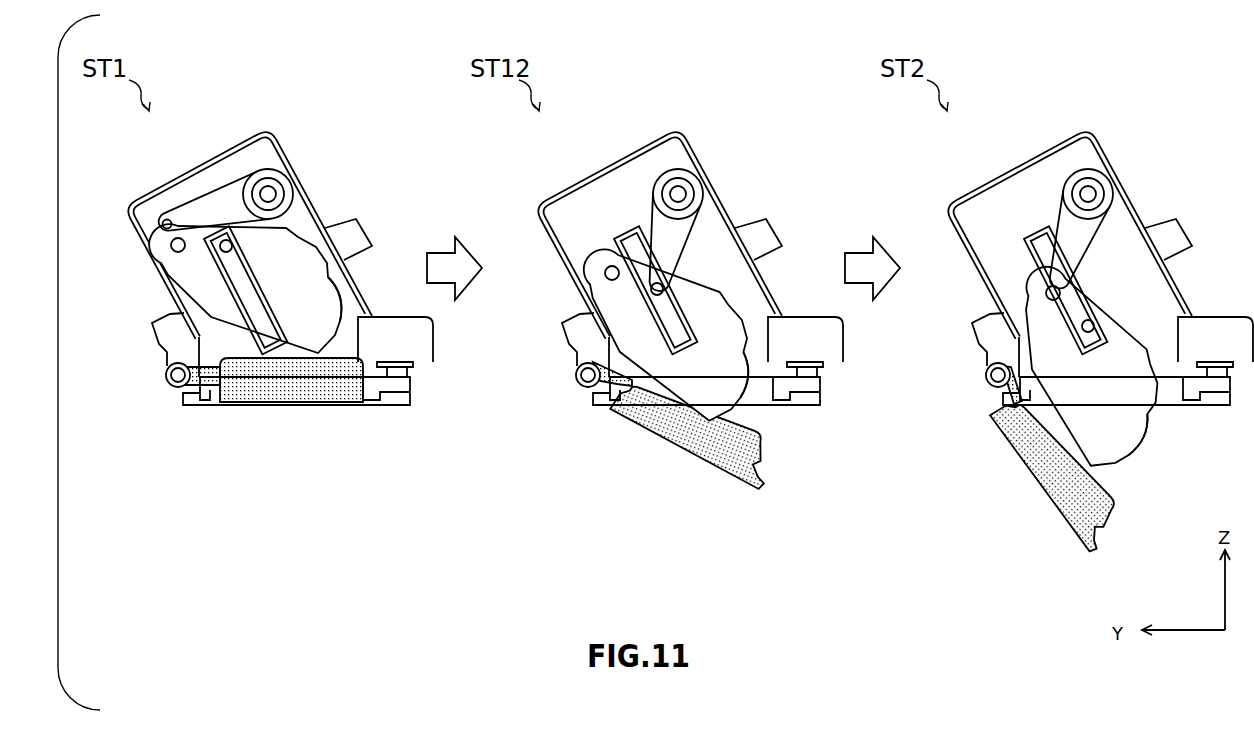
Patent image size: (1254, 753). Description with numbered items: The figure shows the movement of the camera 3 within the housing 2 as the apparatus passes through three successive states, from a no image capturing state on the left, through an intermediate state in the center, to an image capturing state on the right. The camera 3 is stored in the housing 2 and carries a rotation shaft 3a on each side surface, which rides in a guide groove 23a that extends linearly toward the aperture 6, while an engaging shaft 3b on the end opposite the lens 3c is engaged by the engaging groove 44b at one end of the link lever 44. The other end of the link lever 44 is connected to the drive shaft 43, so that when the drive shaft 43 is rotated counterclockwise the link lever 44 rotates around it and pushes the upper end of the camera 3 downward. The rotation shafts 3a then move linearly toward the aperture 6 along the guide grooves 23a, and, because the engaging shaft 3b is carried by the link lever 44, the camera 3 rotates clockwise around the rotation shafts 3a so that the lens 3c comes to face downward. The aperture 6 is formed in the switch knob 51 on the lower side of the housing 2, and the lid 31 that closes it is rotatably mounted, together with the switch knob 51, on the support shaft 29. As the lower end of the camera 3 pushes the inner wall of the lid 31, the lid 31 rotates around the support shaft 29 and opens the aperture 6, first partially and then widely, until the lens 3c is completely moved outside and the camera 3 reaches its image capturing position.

The housing 2 is at (219, 151).
The camera 3 is at (300, 240).
The rotation shaft 3a is at (232, 247).
The engaging shaft 3b is at (182, 253).
The lens 3c is at (342, 315).
The aperture 6 is at (344, 414).
The guide groove 23a is at (273, 308).
The support shaft 29 is at (168, 386).
The lid 31 is at (285, 392).
The drive shaft 43 is at (270, 194).
The link lever 44 is at (225, 206).
The engaging groove 44b is at (165, 216).
The switch knob 51 is at (392, 392).